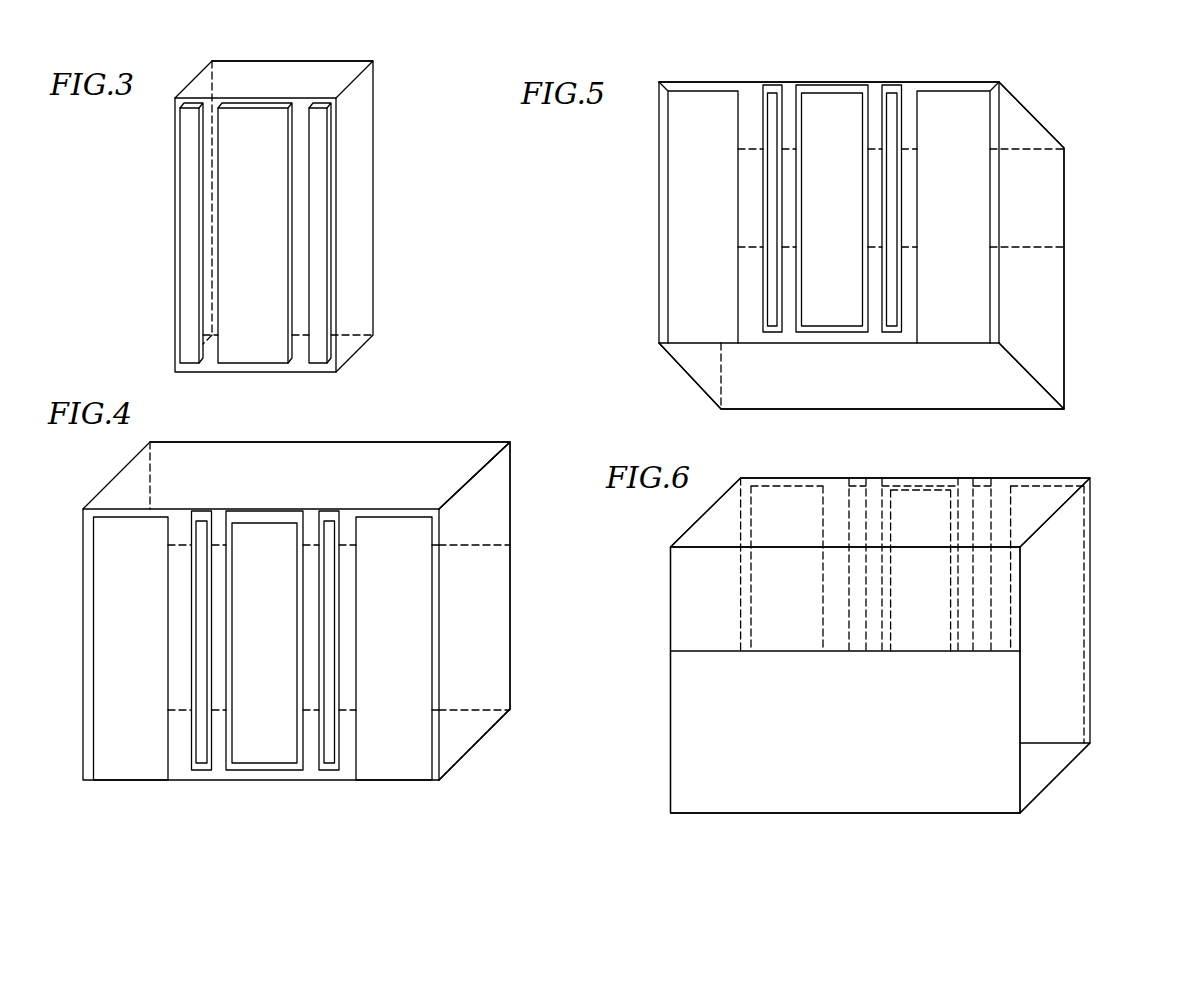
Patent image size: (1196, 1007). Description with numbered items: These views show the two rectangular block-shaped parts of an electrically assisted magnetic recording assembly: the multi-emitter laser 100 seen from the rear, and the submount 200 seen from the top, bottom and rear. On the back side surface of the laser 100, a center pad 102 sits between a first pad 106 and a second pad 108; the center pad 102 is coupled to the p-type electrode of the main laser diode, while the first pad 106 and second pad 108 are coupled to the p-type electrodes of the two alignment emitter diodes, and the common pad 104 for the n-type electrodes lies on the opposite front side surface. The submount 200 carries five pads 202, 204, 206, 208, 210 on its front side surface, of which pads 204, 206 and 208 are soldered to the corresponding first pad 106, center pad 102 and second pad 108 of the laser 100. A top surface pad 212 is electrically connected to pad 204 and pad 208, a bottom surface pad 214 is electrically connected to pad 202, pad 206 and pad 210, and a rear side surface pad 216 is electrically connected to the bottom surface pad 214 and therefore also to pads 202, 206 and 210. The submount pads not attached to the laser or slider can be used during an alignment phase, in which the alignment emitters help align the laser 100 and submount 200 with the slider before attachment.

In FIG. 3, the multi-emitter laser 100 is at (435, 70).
In FIG. 3, the center pad 102 is at (243, 130).
In FIG. 3, the common pad 104 is at (323, 57).
In FIG. 3, the first pad 106 is at (318, 188).
In FIG. 3, the second pad 108 is at (192, 183).
In FIG. 4, the submount 200 is at (478, 426).
In FIG. 5, the submount 200 is at (1068, 69).
In FIG. 6, the submount 200 is at (1087, 471).
In FIG. 4, the pad 202 is at (130, 776).
In FIG. 5, the pad 202 is at (708, 98).
In FIG. 4, the pad 204 is at (203, 768).
In FIG. 5, the pad 204 is at (772, 85).
In FIG. 4, the pad 206 is at (257, 772).
In FIG. 5, the pad 206 is at (827, 98).
In FIG. 4, the pad 208 is at (329, 770).
In FIG. 5, the pad 208 is at (890, 89).
In FIG. 4, the pad 210 is at (397, 774).
In FIG. 5, the pad 210 is at (962, 104).
In FIG. 4, the top surface pad 212 is at (219, 446).
In FIG. 5, the top surface pad 212 is at (1042, 104).
In FIG. 6, the top surface pad 212 is at (720, 518).
In FIG. 4, the bottom surface pad 214 is at (478, 746).
In FIG. 5, the bottom surface pad 214 is at (1035, 402).
In FIG. 6, the bottom surface pad 214 is at (1067, 769).
In FIG. 4, the rear side surface pad 216 is at (514, 597).
In FIG. 5, the rear side surface pad 216 is at (1080, 343).
In FIG. 6, the rear side surface pad 216 is at (712, 799).